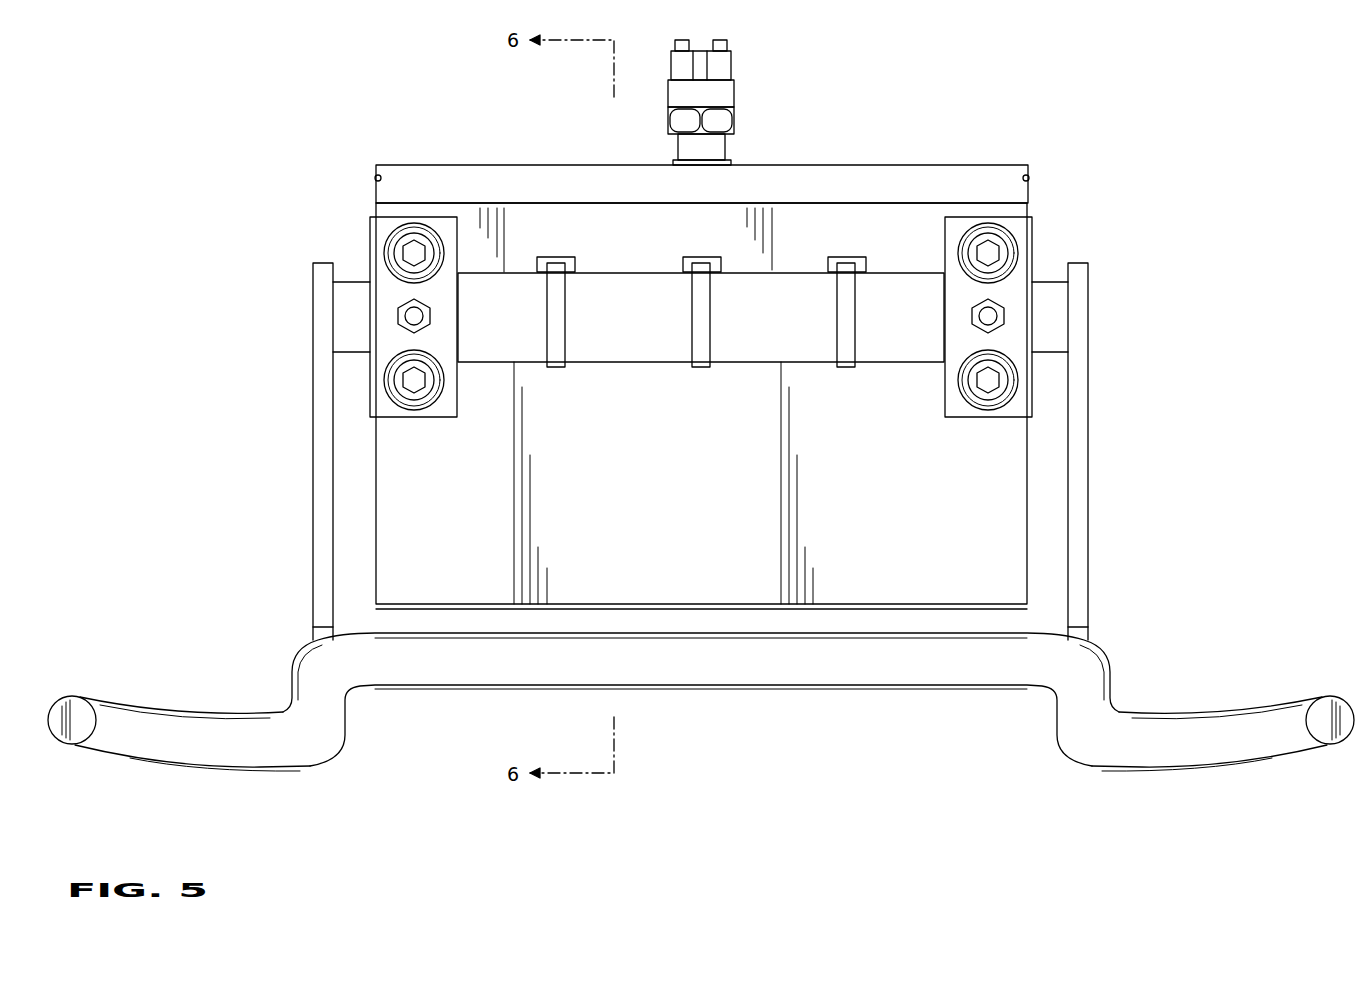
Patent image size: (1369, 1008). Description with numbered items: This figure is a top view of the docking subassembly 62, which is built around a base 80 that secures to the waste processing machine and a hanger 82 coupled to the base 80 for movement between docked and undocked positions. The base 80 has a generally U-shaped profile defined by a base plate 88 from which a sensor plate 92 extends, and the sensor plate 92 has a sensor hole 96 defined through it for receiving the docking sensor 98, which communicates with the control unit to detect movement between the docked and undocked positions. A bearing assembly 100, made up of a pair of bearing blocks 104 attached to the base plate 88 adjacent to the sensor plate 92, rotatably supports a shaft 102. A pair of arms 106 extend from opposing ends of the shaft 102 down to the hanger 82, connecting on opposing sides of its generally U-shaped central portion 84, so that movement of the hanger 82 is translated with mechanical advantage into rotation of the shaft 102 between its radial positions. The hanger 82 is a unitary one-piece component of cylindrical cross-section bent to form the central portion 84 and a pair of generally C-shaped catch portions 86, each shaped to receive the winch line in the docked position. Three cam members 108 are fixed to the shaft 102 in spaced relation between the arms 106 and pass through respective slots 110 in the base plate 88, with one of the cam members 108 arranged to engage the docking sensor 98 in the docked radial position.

The docking subassembly 62 is at (1112, 168).
The base 80 is at (952, 186).
The hanger 82 is at (528, 690).
The central portion 84 is at (765, 658).
The catch portions 86 is at (255, 740).
The base plate 88 is at (881, 516).
The sensor plate 92 is at (798, 165).
The sensor hole 96 is at (732, 160).
The docking sensor 98 is at (733, 70).
The bearing assembly 100 is at (368, 246).
The shaft 102 is at (760, 325).
The bearing blocks 104 is at (387, 278).
The arms 106 is at (320, 520).
The cam members 108 is at (553, 368).
The slots 110 is at (578, 262).